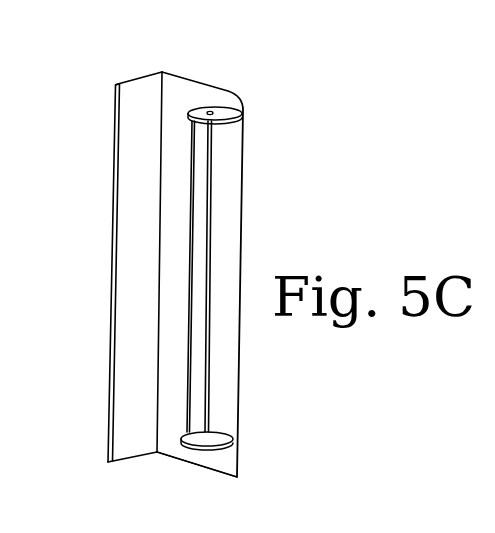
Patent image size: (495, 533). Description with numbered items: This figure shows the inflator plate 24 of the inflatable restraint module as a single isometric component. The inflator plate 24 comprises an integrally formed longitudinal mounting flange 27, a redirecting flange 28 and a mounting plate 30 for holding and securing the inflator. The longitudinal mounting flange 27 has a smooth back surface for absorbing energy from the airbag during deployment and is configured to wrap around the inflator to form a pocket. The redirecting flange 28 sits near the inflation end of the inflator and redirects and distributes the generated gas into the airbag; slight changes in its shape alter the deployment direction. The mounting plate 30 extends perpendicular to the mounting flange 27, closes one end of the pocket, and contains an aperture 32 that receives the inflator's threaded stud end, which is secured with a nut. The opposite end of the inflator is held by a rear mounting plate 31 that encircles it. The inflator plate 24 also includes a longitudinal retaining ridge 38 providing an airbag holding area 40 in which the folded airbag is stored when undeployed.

The inflator plate 24 is at (200, 467).
The longitudinal mounting flange 27 is at (233, 240).
The redirecting flange 28 is at (192, 237).
The mounting plate 30 is at (244, 107).
The rear mounting plate 31 is at (235, 447).
The aperture 32 is at (213, 112).
The longitudinal retaining ridge 38 is at (143, 447).
The airbag holding area 40 is at (204, 277).